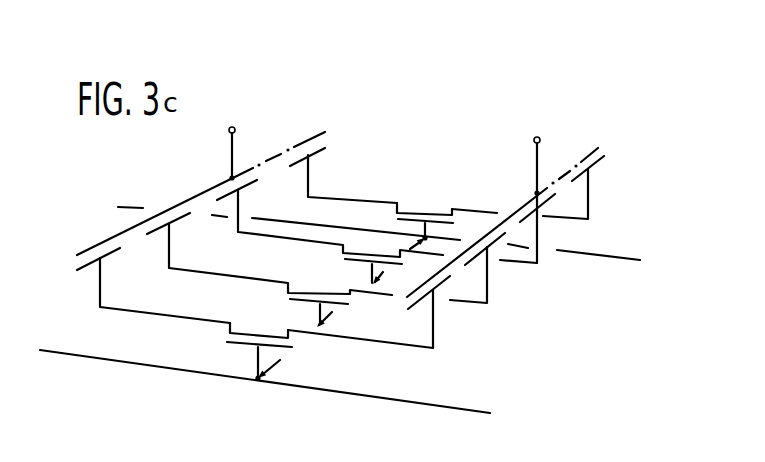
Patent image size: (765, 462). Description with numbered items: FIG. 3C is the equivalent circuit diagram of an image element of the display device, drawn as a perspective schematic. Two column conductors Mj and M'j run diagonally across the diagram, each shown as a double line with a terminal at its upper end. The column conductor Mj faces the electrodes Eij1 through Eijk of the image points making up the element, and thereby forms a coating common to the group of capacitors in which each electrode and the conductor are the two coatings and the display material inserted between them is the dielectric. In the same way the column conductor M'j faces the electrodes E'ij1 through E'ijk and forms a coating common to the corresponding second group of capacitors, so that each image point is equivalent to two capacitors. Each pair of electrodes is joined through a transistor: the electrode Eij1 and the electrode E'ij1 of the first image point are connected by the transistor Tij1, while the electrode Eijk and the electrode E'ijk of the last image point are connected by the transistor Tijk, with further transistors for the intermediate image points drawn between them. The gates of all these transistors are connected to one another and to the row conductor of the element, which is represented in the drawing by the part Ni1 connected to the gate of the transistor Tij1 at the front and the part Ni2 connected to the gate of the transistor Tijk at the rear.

The column conductor Mj is at (97, 247).
The column conductor M'j is at (508, 194).
The electrode Eijk is at (321, 155).
The electrode E'ijk is at (571, 189).
The electrode Eij1 is at (88, 270).
The electrode E'ij1 is at (412, 319).
The transistor Tijk is at (408, 192).
The transistor Tij1 is at (230, 352).
The part of row conductor Ni1 is at (441, 406).
The part of row conductor Ni2 is at (598, 261).